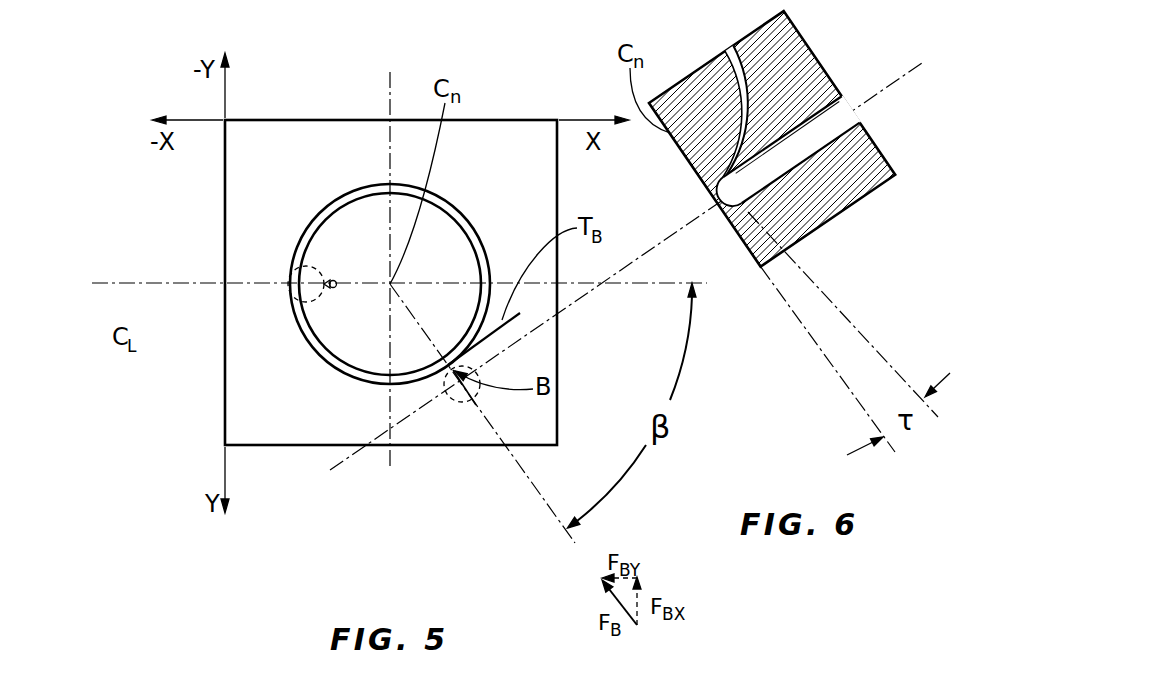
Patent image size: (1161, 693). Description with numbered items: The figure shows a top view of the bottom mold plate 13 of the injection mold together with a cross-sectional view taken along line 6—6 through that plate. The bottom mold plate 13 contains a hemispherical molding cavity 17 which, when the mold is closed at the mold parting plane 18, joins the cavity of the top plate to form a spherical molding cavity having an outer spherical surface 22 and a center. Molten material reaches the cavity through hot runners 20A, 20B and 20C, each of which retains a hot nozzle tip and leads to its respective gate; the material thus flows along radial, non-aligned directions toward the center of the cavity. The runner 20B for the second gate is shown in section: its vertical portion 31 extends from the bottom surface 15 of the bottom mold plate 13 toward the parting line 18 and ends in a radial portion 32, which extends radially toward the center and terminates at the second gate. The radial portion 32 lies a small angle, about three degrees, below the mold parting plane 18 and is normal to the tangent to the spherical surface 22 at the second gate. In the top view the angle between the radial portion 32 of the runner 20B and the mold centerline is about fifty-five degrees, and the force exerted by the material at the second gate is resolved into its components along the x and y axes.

In FIG. 5, the section line 6— 6 is at (388, 286).
In FIG. 5, the bottom mold plate 13 is at (558, 370).
In FIG. 6, the bottom surface 15 is at (898, 168).
In FIG. 5, the hemispherical molding cavity 17 is at (336, 363).
In FIG. 6, the mold parting plane 18 is at (741, 236).
In FIG. 6, the hot runner 20A is at (851, 99).
In FIG. 5, the hot runner 20B is at (462, 402).
In FIG. 5, the hot runner 20C is at (291, 300).
In FIG. 5, the outer spherical surface 22 is at (333, 204).
In FIG. 6, the vertical portion 31 is at (866, 127).
In FIG. 6, the radial portion 32 is at (716, 178).